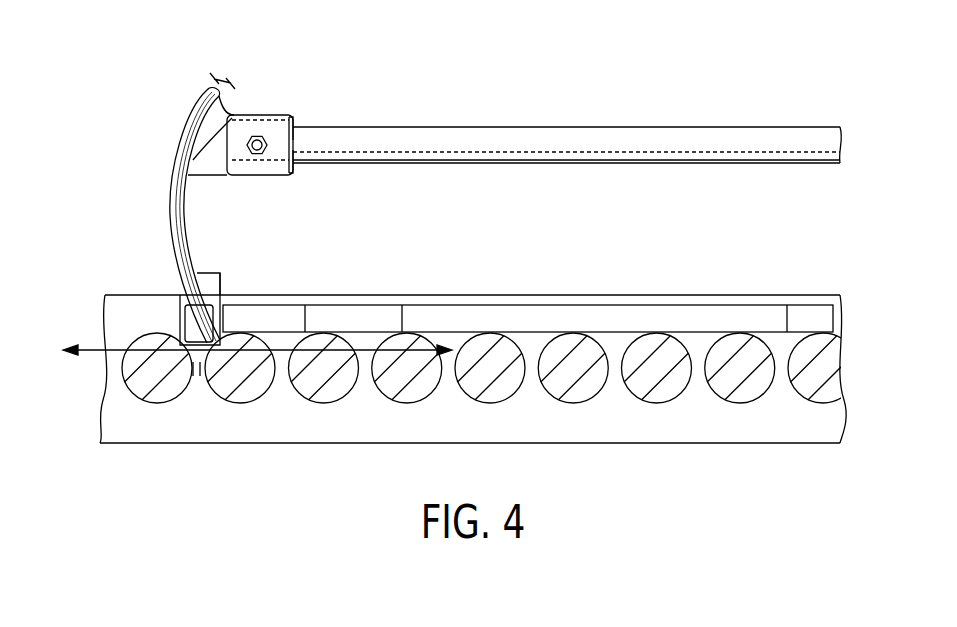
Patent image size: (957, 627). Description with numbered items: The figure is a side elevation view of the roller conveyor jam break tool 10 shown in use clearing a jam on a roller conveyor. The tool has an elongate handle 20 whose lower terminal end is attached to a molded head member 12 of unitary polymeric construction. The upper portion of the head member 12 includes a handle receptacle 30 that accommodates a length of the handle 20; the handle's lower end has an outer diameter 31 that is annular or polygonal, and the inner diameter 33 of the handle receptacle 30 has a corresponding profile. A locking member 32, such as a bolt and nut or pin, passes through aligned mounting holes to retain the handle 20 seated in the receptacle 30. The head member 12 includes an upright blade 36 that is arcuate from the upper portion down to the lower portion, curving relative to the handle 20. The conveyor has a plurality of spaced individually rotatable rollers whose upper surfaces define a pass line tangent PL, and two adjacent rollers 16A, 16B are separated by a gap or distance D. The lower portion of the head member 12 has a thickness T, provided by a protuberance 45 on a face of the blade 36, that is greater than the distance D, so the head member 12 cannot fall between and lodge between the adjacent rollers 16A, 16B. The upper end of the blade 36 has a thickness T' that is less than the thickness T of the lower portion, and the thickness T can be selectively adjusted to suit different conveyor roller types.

The roller conveyor jam break tool 10 is at (128, 76).
The molded head member 12 is at (256, 99).
The adjacent roller 16A is at (168, 395).
The adjacent roller 16B is at (245, 390).
The elongate handle 20 is at (628, 125).
The handle receptacle 30 is at (280, 112).
The outer diameter 31 is at (293, 165).
The locking member 32 is at (258, 155).
The inner diameter 33 is at (300, 127).
The upright blade 36 is at (170, 230).
The protuberance 45 is at (186, 328).
The gap or distance D is at (197, 375).
The thickness T is at (217, 249).
The thickness T' is at (227, 49).
The pass line tangent PL is at (93, 348).